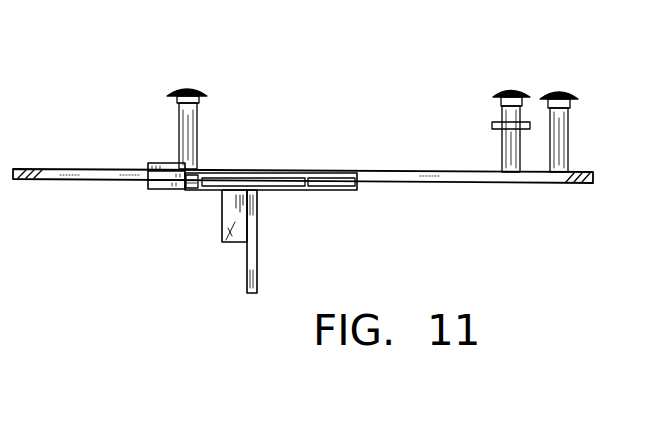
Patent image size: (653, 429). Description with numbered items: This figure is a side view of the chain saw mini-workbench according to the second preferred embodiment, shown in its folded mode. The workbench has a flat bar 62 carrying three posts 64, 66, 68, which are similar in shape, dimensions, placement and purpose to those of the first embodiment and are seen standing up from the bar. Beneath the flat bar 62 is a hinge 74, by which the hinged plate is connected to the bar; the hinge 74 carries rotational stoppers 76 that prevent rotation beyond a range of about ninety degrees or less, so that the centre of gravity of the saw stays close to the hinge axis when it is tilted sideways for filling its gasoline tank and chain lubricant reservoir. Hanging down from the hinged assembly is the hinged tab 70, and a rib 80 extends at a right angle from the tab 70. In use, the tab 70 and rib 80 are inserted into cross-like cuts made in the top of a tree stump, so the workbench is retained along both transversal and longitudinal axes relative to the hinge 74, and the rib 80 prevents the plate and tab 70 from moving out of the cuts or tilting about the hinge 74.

The flat bar 62 is at (397, 172).
The post 64 is at (555, 90).
The post 66 is at (177, 88).
The post 68 is at (497, 93).
The hinged tab 70 is at (247, 262).
The hinge 74 is at (287, 190).
The rotational stoppers 76 is at (148, 188).
The rib 80 is at (222, 237).